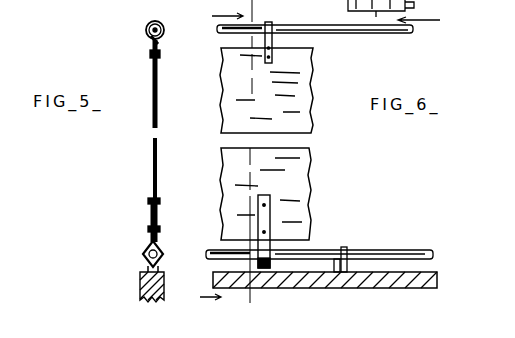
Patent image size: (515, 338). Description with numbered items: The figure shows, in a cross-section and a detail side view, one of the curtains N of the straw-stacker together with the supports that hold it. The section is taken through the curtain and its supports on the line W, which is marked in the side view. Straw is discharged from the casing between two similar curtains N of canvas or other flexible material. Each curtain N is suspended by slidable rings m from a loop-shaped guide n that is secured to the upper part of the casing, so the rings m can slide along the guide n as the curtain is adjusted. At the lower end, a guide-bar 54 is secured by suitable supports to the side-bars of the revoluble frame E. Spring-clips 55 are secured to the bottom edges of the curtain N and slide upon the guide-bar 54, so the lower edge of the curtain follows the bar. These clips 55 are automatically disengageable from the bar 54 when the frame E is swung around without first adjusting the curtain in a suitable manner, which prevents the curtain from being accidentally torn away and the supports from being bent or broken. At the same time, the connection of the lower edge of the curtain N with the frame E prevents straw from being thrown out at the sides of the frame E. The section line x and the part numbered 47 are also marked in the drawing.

In FIG. 5, the arm fragment 47 is at (32, 5).
In FIG. 5, the slidable ring m is at (146, 29).
In FIG. 6, the slidable ring m is at (276, 22).
In FIG. 5, the loop-shaped guide n is at (149, 38).
In FIG. 6, the loop-shaped guide n is at (358, 31).
In FIG. 5, the curtain N is at (161, 115).
In FIG. 6, the curtain N is at (290, 113).
In FIG. 6, the section line x— x is at (394, 12).
In FIG. 5, the guide-bar 54 is at (140, 254).
In FIG. 6, the guide-bar 54 is at (395, 254).
In FIG. 5, the spring-clip 55 is at (158, 252).
In FIG. 6, the spring-clip 55 is at (273, 252).
In FIG. 5, the revoluble frame E is at (138, 275).
In FIG. 6, the revoluble frame E is at (440, 284).
In FIG. 6, the section line w—w W is at (225, 227).